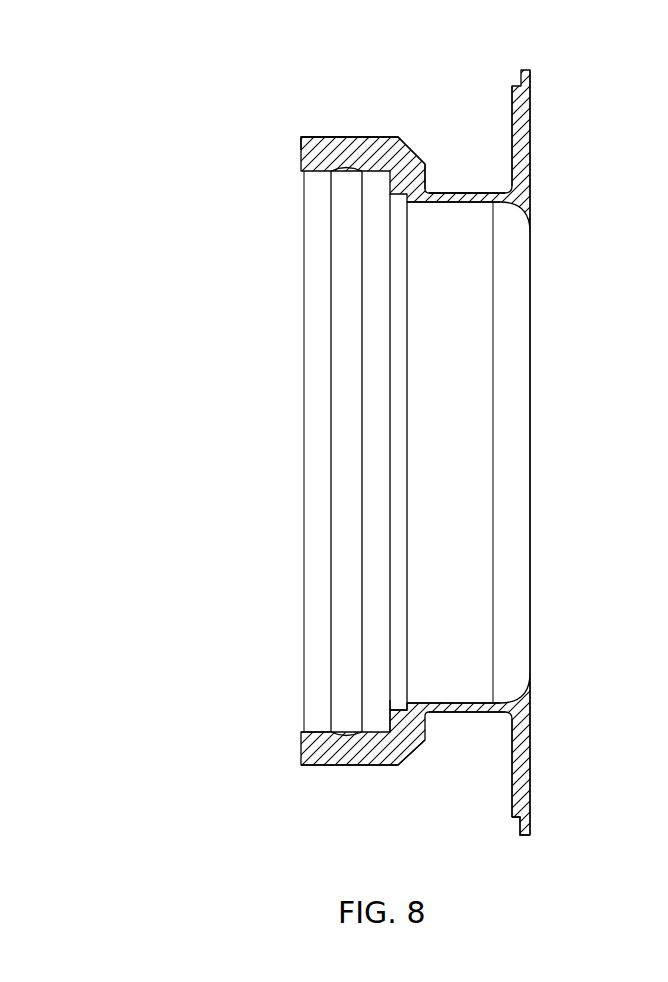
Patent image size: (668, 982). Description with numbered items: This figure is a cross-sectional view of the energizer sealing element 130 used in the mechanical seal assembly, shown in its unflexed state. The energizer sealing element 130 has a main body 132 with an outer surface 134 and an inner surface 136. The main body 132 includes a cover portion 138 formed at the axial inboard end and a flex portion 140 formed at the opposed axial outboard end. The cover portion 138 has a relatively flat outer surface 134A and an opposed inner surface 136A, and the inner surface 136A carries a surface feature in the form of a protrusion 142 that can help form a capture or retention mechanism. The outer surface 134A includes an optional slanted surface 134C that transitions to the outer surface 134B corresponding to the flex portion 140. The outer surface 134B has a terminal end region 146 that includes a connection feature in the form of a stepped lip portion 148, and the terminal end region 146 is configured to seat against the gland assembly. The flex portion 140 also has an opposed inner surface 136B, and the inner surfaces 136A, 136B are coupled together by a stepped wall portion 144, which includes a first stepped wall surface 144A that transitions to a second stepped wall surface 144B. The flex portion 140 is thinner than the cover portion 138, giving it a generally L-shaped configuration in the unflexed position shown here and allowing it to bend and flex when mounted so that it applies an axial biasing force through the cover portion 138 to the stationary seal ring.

The energizer sealing element 130 is at (183, 282).
The main body 132 is at (345, 137).
The outer surface 134 is at (384, 131).
The outer surface 134A is at (317, 766).
The outer surface 134B is at (455, 714).
The slanted surface 134C is at (405, 758).
The inner surface 136 is at (453, 228).
The inner surface 136A is at (312, 730).
The inner surface 136B is at (488, 702).
The cover portion 138 is at (305, 135).
The flex portion 140 is at (458, 182).
The protrusion 142 is at (342, 170).
The stepped wall portion 144 is at (381, 188).
The first stepped wall surface 144A is at (390, 722).
The second stepped wall surface 144B is at (407, 698).
The terminal end region 146 is at (557, 790).
The stepped lip portion 148 is at (522, 822).